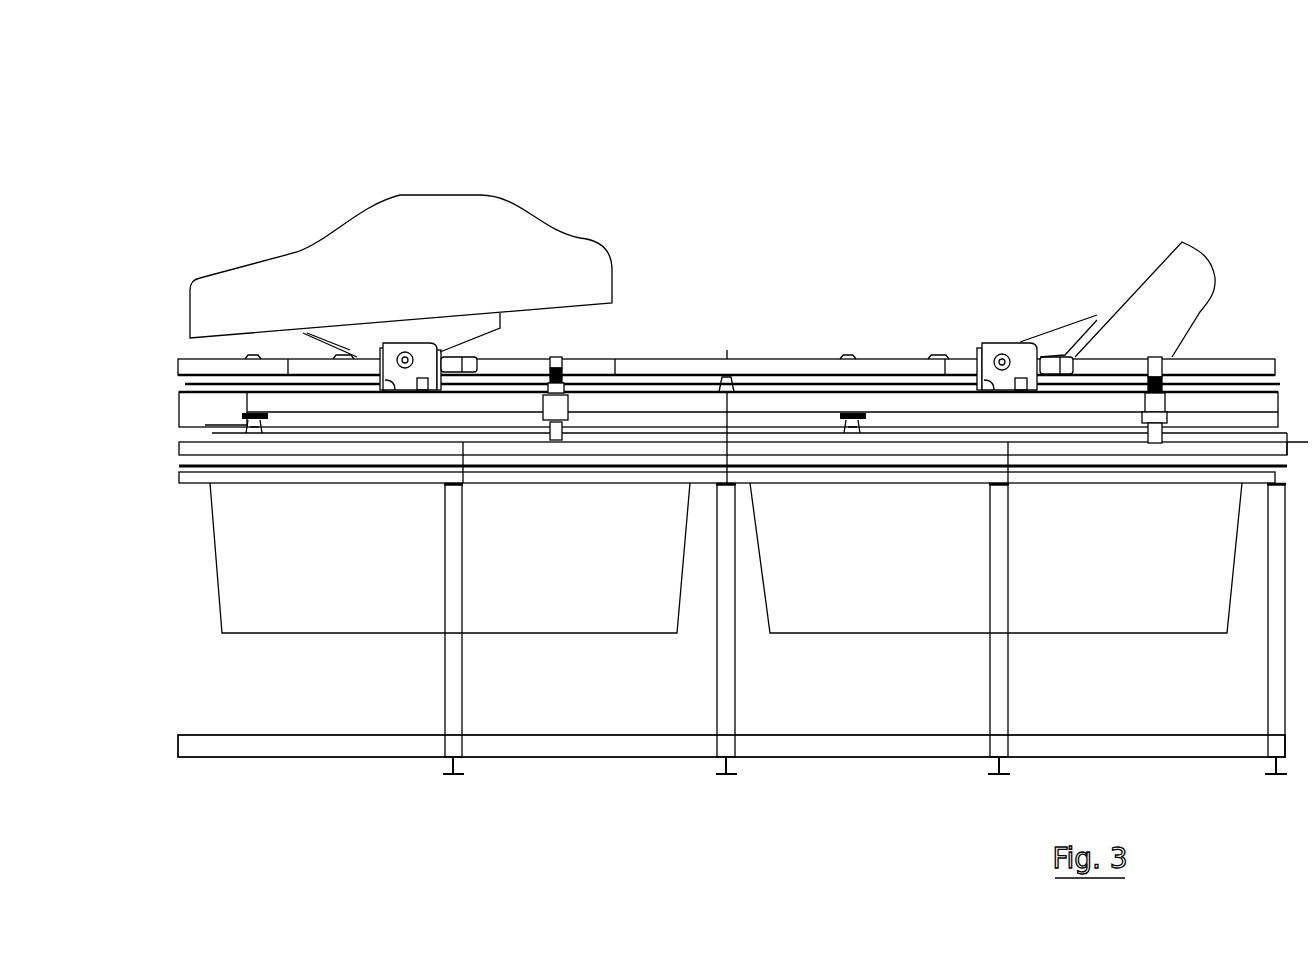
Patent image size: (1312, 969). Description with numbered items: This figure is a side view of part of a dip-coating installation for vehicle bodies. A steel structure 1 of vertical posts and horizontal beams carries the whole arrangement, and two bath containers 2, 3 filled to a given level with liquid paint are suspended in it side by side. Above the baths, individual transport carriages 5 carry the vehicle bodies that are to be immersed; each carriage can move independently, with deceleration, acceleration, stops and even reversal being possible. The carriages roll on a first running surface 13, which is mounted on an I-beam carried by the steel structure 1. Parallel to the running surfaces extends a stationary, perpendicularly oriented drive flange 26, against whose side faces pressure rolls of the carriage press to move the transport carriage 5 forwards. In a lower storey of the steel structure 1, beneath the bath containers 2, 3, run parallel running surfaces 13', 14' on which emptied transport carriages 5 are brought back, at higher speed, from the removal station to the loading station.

The steel structure 1 is at (447, 690).
The bath container 2 is at (402, 577).
The bath container 3 is at (915, 577).
The transport carriage 5 is at (316, 407).
The first running surface 13 is at (711, 485).
The running surface 13' is at (731, 776).
The running surface 14' is at (731, 746).
The drive flange 26 is at (660, 430).